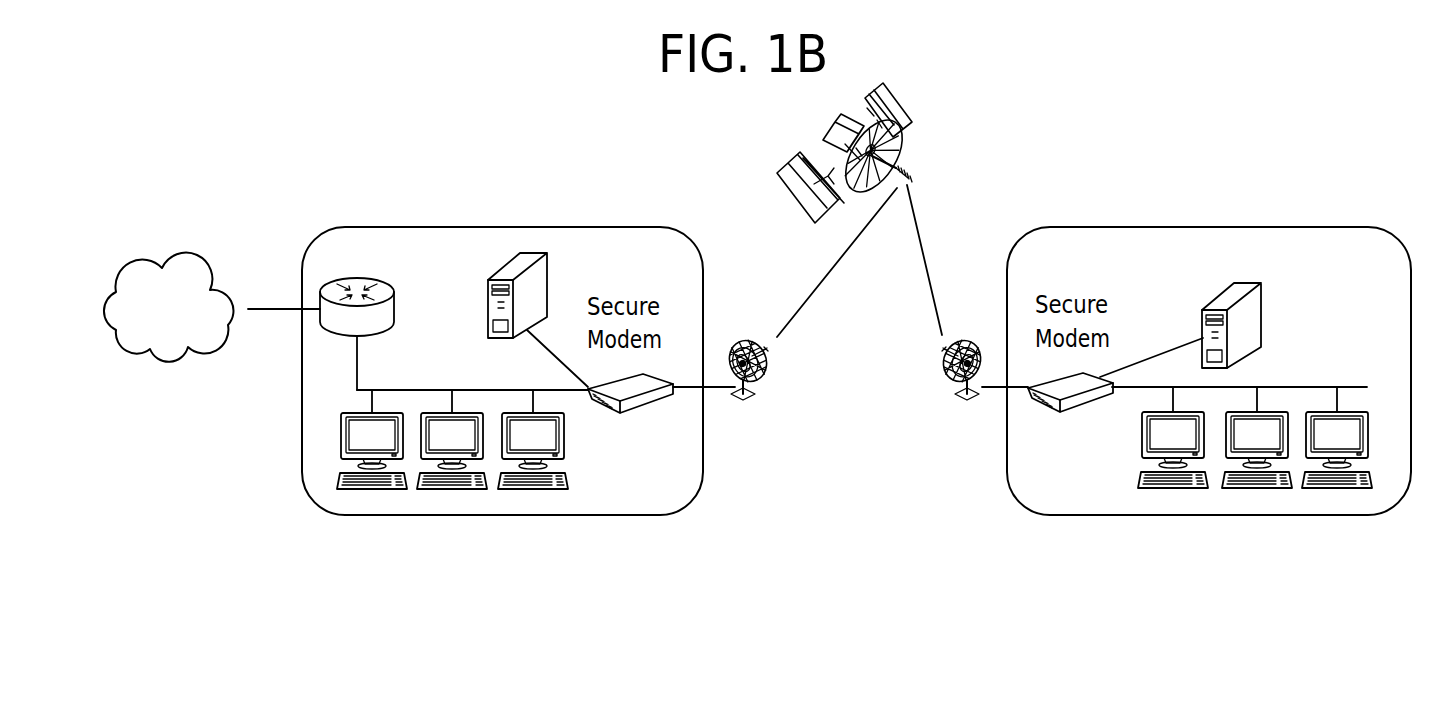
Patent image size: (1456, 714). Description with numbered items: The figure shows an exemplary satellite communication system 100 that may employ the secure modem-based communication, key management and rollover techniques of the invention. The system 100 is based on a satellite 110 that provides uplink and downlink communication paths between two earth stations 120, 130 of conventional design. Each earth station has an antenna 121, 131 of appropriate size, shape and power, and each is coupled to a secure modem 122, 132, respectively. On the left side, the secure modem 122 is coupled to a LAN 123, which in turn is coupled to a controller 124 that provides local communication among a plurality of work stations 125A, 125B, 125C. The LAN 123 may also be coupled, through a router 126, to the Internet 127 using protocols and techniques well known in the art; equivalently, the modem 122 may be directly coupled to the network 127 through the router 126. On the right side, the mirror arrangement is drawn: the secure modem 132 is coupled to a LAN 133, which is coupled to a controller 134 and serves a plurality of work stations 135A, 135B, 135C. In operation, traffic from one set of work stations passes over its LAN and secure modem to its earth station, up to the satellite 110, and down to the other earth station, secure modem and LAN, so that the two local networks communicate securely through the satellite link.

The system 100 is at (1355, 132).
The satellite 110 is at (900, 148).
The earth station 120 is at (750, 398).
The antenna 121 is at (768, 370).
The secure modem 122 is at (633, 411).
The LAN 123 is at (356, 381).
The controller 124 is at (540, 255).
The work station 125A is at (368, 490).
The work station 125B is at (453, 490).
The work station 125C is at (533, 490).
The router 126 is at (340, 277).
The Internet 127 is at (160, 260).
The earth station 130 is at (965, 400).
The antenna 131 is at (942, 380).
The secure modem 132 is at (1072, 408).
The LAN 133 is at (1350, 387).
The controller 134 is at (1248, 283).
The work station 135A is at (1170, 489).
The work station 135B is at (1255, 489).
The work station 135C is at (1335, 489).